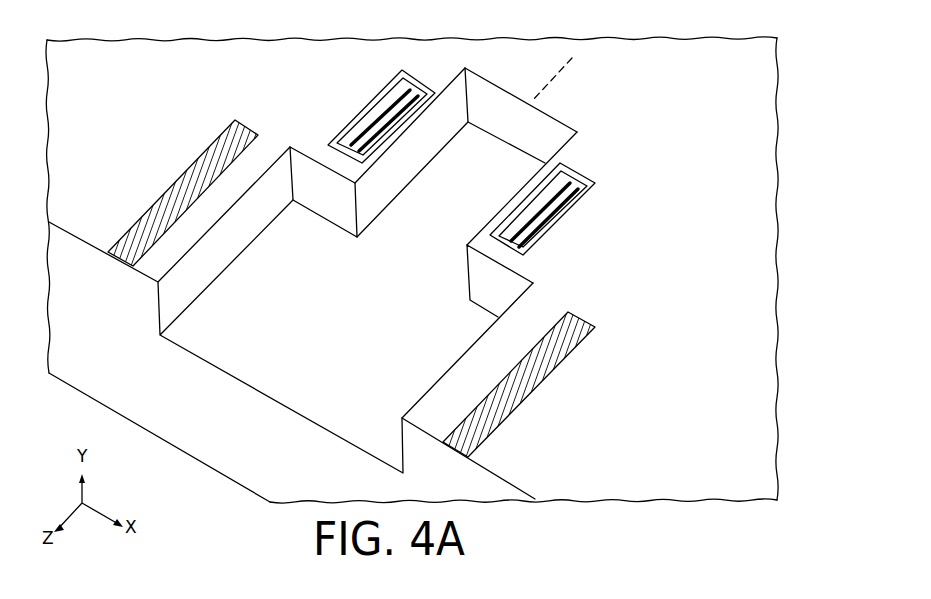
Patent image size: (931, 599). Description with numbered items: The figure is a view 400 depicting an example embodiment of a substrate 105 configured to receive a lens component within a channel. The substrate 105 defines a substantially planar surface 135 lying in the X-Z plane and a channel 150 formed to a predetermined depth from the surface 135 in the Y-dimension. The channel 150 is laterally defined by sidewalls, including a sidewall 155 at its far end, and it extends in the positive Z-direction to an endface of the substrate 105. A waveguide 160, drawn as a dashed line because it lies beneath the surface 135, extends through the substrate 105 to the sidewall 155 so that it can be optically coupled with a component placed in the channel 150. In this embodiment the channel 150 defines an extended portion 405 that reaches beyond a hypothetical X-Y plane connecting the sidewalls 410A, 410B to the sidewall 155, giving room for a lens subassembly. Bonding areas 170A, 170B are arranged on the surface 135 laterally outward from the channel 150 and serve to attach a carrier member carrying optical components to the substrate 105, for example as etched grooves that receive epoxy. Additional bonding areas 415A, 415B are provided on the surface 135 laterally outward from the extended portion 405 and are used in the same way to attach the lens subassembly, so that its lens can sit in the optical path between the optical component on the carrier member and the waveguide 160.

The view 400 is at (681, 91).
The substrate 105 is at (103, 393).
The surface 135 is at (672, 320).
The channel 150 is at (272, 356).
The sidewall 155 is at (547, 132).
The waveguide 160 is at (560, 64).
The bonding area 170A is at (167, 200).
The bonding area 170B is at (525, 393).
The extended portion 405 is at (431, 214).
The sidewall 410A is at (316, 203).
The sidewall 410B is at (482, 287).
The bonding area 415A is at (358, 128).
The bonding area 415B is at (555, 209).